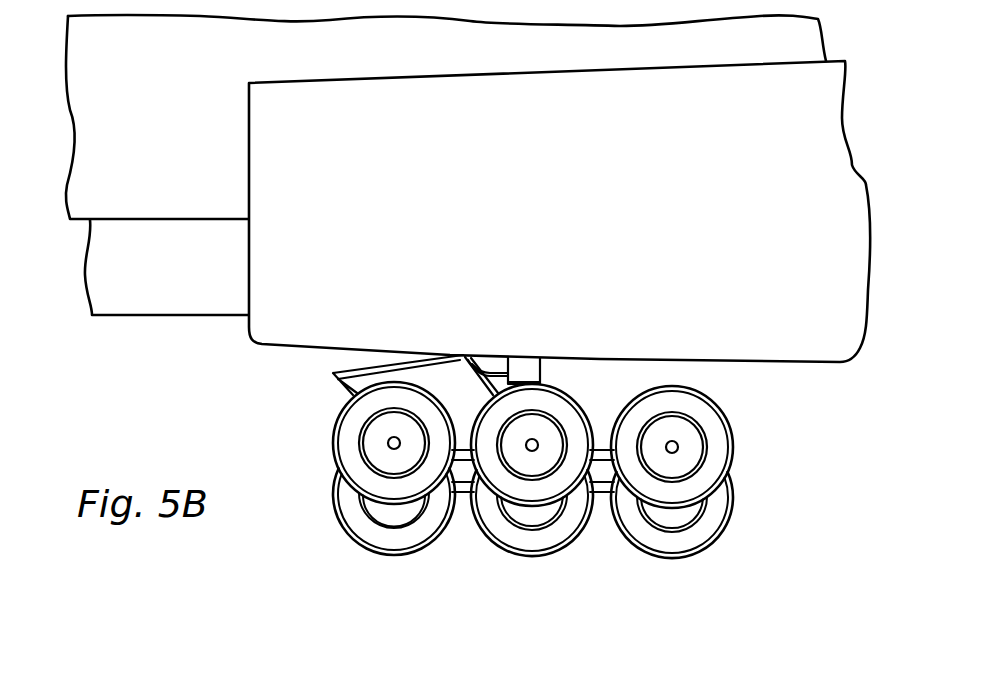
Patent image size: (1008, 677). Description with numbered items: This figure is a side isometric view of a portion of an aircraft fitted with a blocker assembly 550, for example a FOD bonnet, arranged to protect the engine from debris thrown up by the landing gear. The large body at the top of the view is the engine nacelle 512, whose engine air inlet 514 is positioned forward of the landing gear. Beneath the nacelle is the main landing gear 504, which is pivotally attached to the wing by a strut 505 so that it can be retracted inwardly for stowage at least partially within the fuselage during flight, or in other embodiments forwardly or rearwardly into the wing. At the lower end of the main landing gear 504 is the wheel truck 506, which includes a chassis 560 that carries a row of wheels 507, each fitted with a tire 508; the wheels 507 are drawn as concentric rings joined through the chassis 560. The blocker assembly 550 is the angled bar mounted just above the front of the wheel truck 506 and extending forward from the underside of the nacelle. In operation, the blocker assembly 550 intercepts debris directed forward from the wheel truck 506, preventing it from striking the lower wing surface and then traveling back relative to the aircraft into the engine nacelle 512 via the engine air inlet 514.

The engine nacelle 512 is at (581, 233).
The engine air inlet 514 is at (248, 325).
The strut 505 is at (525, 358).
The blocker assembly 550 is at (320, 373).
The main landing gear 504 is at (590, 383).
The wheels 507 is at (372, 450).
The tires 508 is at (413, 484).
The wheel truck 506 is at (327, 496).
The chassis 560 is at (608, 522).